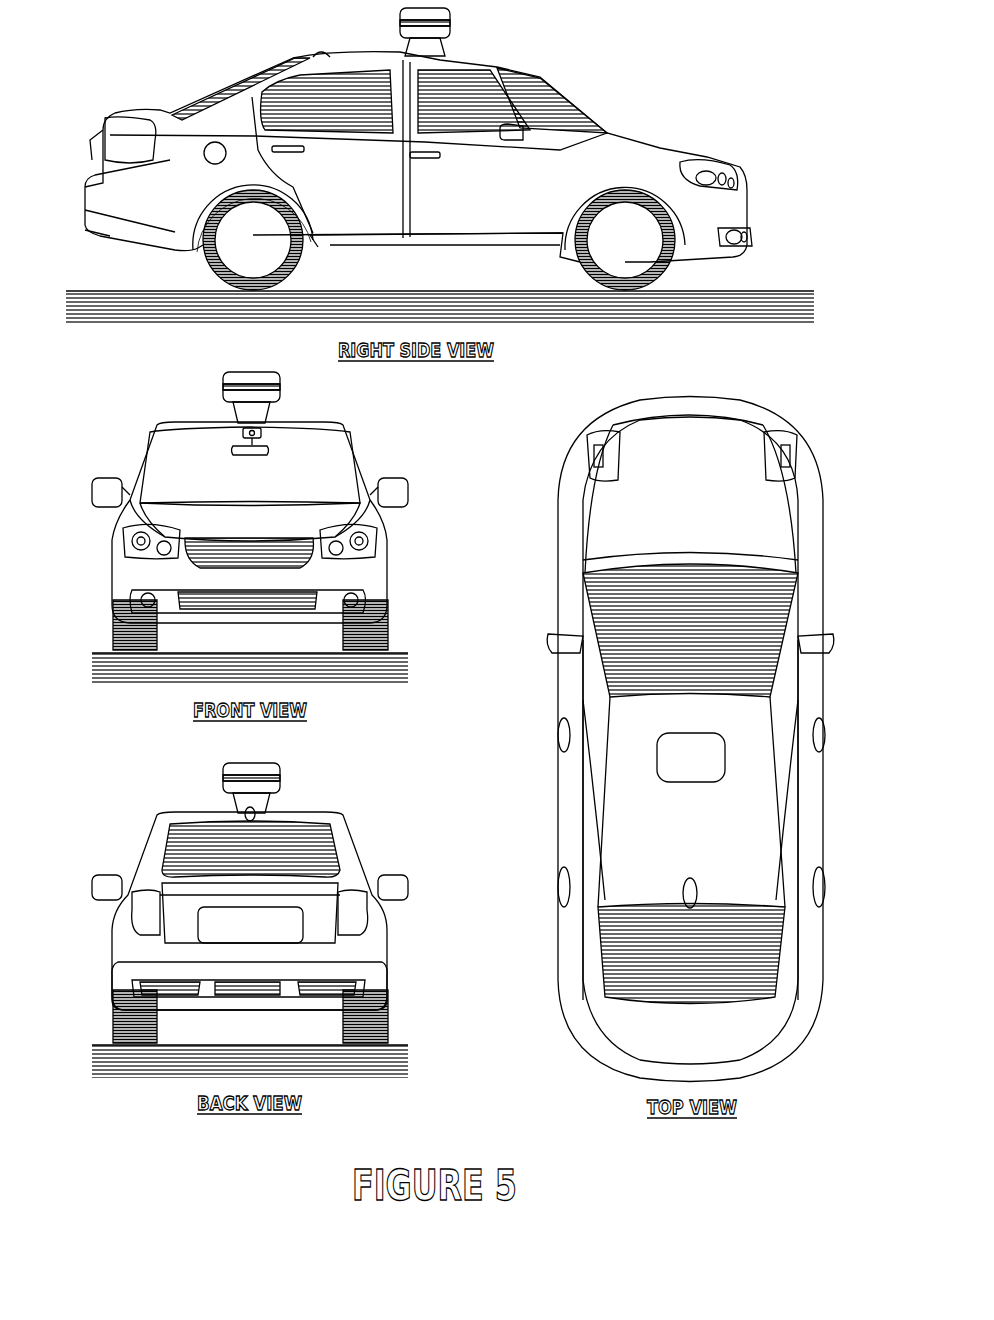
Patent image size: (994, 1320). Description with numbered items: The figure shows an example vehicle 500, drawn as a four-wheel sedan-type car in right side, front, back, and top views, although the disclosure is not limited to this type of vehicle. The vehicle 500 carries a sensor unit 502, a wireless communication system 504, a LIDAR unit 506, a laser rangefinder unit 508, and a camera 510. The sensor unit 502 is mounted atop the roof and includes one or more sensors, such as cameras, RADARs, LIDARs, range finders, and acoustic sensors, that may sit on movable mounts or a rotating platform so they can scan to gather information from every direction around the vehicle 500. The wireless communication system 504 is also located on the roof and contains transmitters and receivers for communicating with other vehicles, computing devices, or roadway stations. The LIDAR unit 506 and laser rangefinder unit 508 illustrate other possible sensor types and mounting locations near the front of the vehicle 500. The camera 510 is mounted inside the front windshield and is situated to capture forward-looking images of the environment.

The vehicle 500 is at (78, 98).
The sensor unit 502 is at (452, 33).
The wireless communication system 504 is at (318, 50).
The LIDAR unit 506 is at (758, 231).
The laser rangefinder unit 508 is at (742, 185).
The camera 510 is at (262, 434).